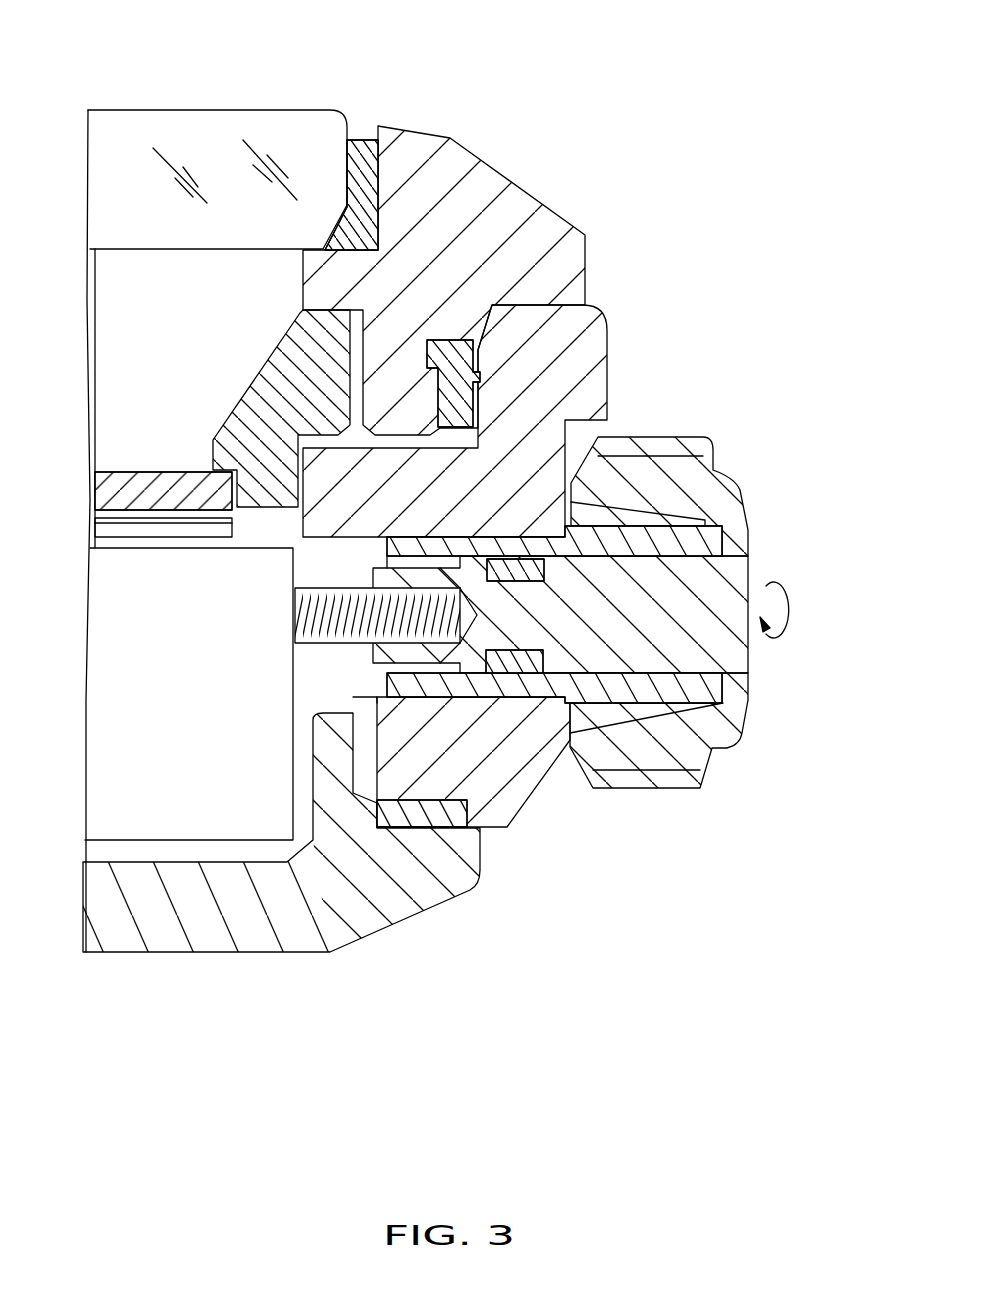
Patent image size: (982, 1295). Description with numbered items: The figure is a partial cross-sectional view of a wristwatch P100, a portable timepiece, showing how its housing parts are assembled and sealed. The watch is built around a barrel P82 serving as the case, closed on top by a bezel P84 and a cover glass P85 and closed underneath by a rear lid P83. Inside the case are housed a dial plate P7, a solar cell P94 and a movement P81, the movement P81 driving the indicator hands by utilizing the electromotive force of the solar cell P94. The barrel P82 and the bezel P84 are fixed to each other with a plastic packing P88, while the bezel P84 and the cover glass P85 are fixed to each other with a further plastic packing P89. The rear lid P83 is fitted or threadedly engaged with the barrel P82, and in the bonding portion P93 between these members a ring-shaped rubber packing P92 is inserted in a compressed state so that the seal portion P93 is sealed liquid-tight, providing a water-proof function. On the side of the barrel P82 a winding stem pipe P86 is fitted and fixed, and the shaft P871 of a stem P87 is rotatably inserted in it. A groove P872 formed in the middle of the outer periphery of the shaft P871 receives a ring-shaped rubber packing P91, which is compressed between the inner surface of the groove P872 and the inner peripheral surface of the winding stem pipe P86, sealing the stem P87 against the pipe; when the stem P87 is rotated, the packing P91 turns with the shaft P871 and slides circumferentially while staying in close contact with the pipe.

The wristwatch P100 is at (654, 120).
The cover glass P85 is at (215, 137).
The plastic packing P89 is at (360, 160).
The bezel P84 is at (507, 203).
The plastic packing P88 is at (470, 357).
The barrel P82 is at (600, 343).
The dial plate P7 is at (162, 487).
The stem P87 is at (690, 480).
The winding stem pipe P86 is at (730, 528).
The solar cell P94 is at (217, 525).
The groove P872 is at (535, 585).
The movement P81 is at (278, 738).
The shaft P871 is at (705, 748).
The rubber packing P91 is at (517, 667).
The rubber packing P92 is at (437, 817).
The bonding portion P93 is at (423, 827).
The rear lid P83 is at (247, 933).